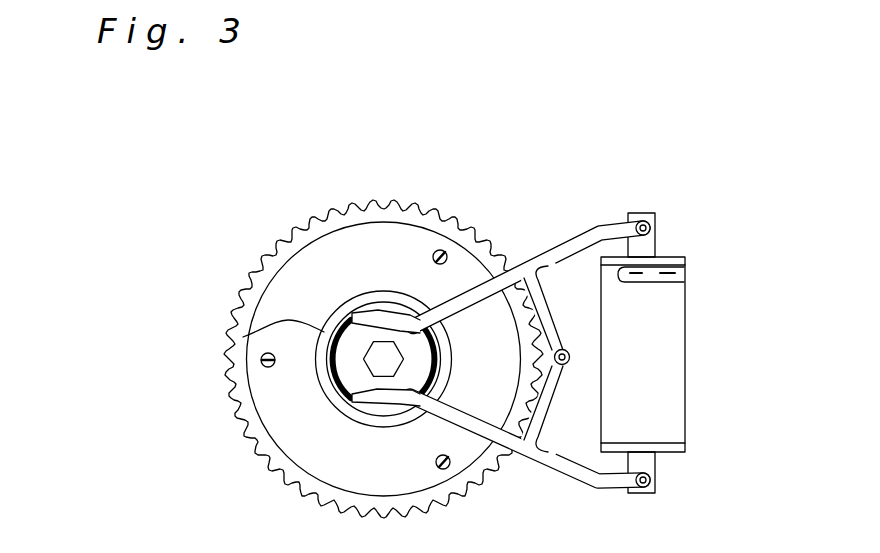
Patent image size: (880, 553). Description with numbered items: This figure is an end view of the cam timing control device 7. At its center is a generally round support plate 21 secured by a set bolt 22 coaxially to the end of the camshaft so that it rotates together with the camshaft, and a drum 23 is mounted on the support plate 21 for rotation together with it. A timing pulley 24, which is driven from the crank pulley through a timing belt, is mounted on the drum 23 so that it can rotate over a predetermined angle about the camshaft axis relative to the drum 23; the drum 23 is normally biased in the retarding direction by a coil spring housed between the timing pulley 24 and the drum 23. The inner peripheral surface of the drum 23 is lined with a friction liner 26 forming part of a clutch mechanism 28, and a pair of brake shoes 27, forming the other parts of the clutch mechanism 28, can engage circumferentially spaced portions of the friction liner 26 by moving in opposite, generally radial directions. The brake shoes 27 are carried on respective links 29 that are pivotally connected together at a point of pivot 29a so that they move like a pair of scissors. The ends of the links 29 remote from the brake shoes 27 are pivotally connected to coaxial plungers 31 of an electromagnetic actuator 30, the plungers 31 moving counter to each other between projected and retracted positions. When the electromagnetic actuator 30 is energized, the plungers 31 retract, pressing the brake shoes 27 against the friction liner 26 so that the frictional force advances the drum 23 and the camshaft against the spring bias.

The cam timing control device 7 is at (504, 166).
The support plate 21 is at (243, 337).
The set bolt 22 is at (366, 359).
The drum 23 is at (337, 312).
The timing pulley 24 is at (342, 204).
The friction liner 26 is at (378, 296).
The brake shoes 27 is at (441, 346).
The clutch mechanism 28 is at (428, 293).
The links 29 is at (577, 232).
The point of pivot 29a is at (563, 347).
The electromagnetic actuator 30 is at (670, 378).
The plungers 31 is at (650, 238).